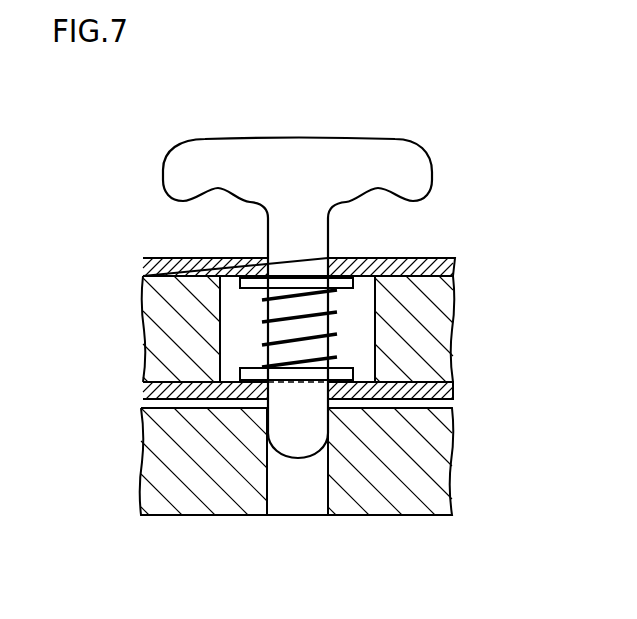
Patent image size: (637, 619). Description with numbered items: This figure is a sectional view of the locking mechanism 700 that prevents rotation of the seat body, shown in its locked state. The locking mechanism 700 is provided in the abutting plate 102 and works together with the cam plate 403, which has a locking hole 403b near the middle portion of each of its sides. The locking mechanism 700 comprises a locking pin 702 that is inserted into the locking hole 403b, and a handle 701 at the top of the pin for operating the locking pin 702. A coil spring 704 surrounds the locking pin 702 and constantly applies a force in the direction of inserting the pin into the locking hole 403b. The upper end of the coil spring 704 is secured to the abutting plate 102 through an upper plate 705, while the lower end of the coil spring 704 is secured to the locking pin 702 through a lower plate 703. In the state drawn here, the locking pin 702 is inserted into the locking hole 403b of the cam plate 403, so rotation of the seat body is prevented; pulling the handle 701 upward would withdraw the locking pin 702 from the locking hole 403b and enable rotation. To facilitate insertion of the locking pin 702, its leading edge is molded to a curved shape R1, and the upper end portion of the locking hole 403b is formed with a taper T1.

The locking mechanism 700 is at (144, 145).
The handle 701 is at (340, 153).
The locking pin 702 is at (310, 228).
The lower plate 703 is at (252, 368).
The coil spring 704 is at (262, 328).
The upper plate 705 is at (250, 288).
The abutting plate 102 is at (432, 312).
The cam plate 403 is at (430, 479).
The locking hole 403b is at (308, 488).
The taper T1 is at (343, 427).
The curved shape R1 is at (297, 458).